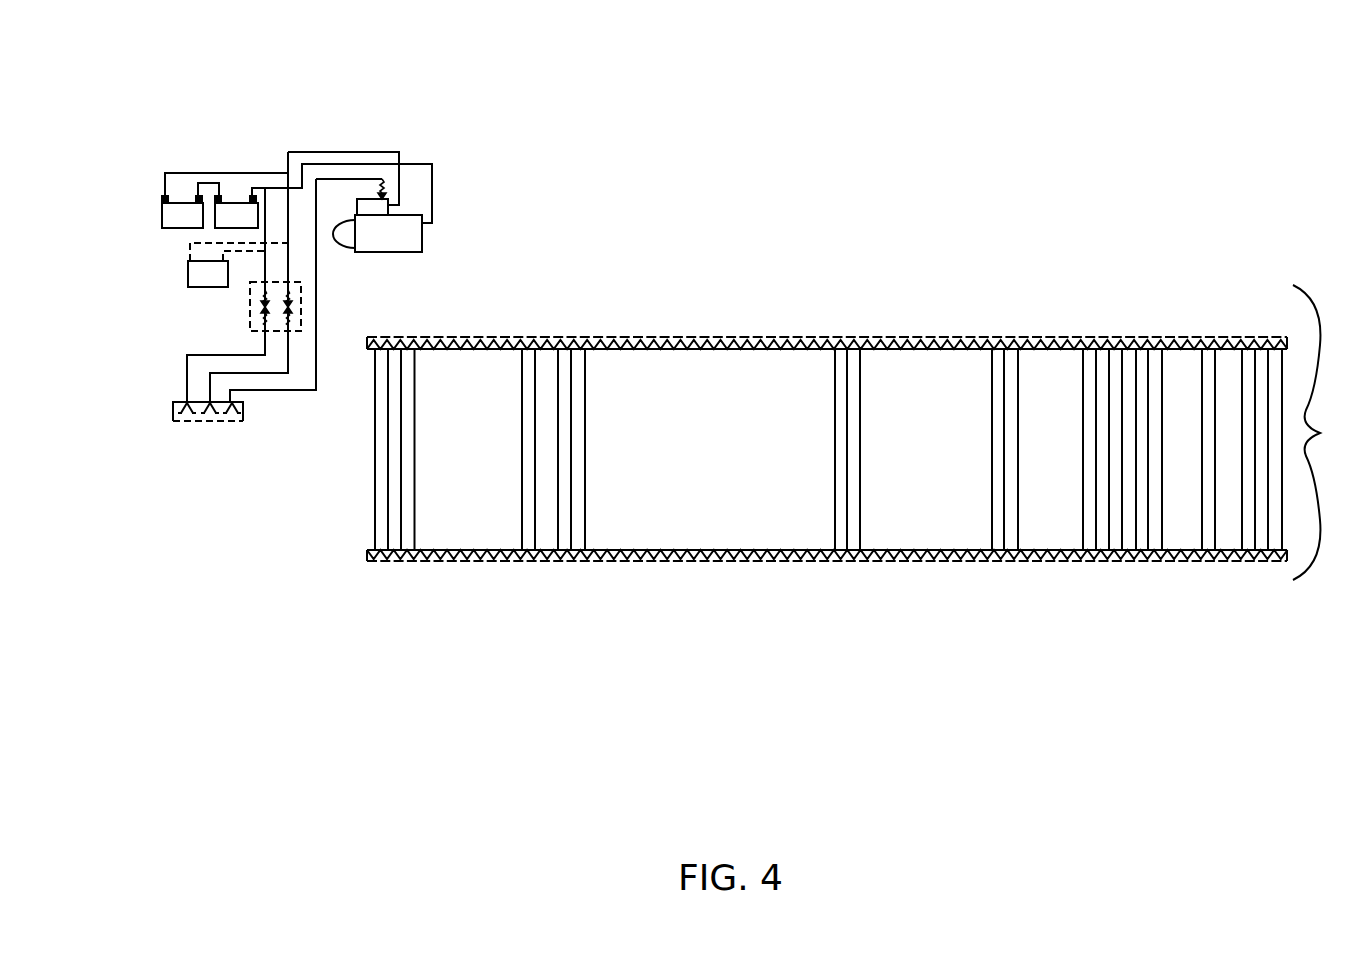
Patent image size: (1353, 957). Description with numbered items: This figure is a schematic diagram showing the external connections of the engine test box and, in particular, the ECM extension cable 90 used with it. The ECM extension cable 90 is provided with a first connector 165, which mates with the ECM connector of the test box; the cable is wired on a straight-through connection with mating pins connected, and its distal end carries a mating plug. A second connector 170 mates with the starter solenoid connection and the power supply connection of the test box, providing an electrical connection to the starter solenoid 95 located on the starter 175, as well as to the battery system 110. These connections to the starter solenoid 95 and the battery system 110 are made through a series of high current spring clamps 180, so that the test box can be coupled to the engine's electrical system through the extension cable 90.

The ECM extension cable 90 is at (859, 432).
The starter solenoid 95 is at (363, 203).
The battery system 110 is at (178, 218).
The first connector 165 is at (367, 558).
The second connector 170 is at (177, 407).
The starter 175 is at (392, 232).
The high current spring clamps 180 is at (384, 185).